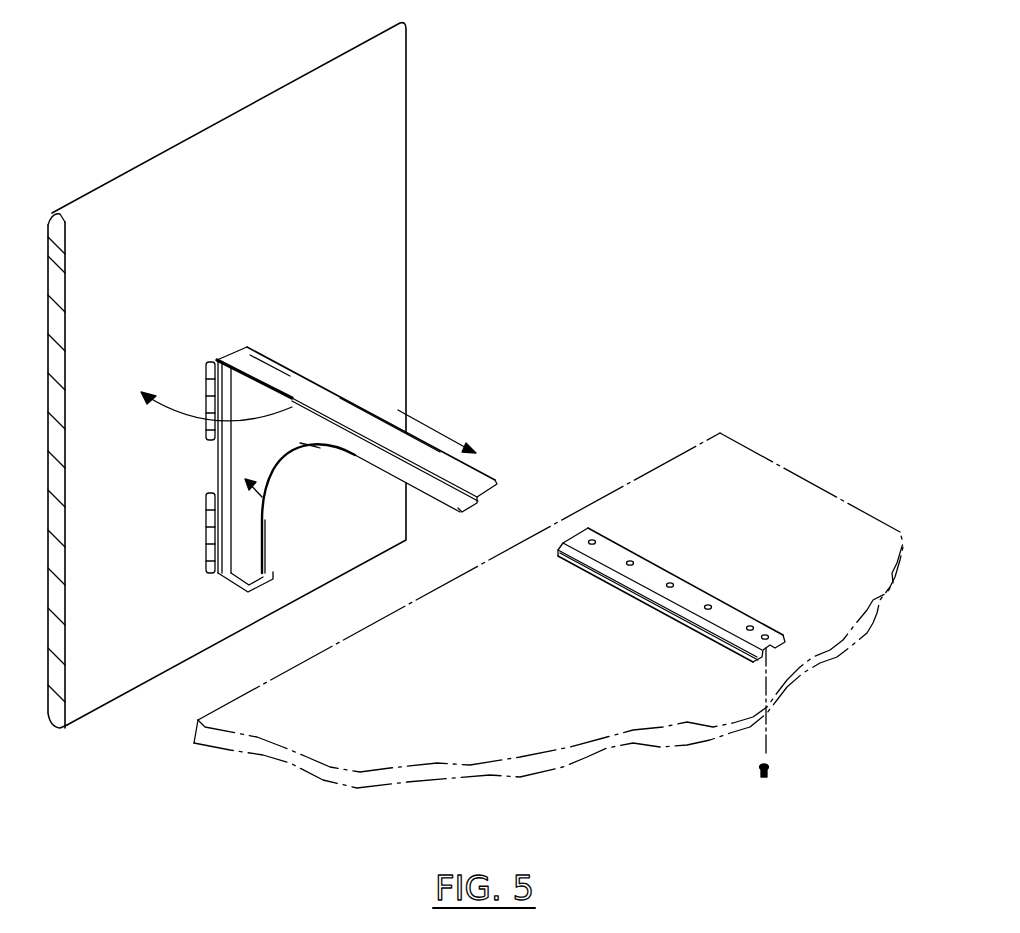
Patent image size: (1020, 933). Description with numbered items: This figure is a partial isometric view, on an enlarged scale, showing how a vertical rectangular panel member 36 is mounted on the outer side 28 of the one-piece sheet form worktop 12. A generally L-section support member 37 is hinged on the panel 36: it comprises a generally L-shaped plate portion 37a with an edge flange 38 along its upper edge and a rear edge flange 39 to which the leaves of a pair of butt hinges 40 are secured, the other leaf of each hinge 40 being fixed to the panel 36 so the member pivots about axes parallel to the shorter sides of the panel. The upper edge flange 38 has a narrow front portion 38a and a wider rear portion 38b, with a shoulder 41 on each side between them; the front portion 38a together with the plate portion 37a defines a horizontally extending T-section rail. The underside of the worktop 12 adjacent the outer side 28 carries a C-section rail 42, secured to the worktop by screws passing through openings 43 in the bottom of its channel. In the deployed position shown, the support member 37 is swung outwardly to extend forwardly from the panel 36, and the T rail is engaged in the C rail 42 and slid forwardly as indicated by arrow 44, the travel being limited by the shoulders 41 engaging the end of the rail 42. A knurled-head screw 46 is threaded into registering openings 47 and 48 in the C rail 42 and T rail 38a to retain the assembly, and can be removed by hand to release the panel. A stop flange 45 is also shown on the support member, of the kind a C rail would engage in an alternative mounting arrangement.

The worktop 12 is at (767, 500).
The outer side 28 is at (630, 480).
The vertical rectangular panel member 36 is at (398, 90).
The support member 37 is at (263, 500).
The plate portion 37a is at (300, 443).
The edge flange 38 is at (250, 358).
The narrow front portion 38a is at (359, 412).
The wider rear portion 38b is at (287, 372).
The rear edge flange 39 is at (222, 457).
The butt hinge 40 is at (212, 358).
The shoulder 41 is at (305, 378).
The C-section rail 42 is at (657, 600).
The opening 43 is at (595, 540).
The arrow 44 is at (434, 428).
The stop flange 45 is at (227, 578).
The screw 46 is at (770, 772).
The opening 47 is at (767, 635).
The opening 48 is at (484, 491).